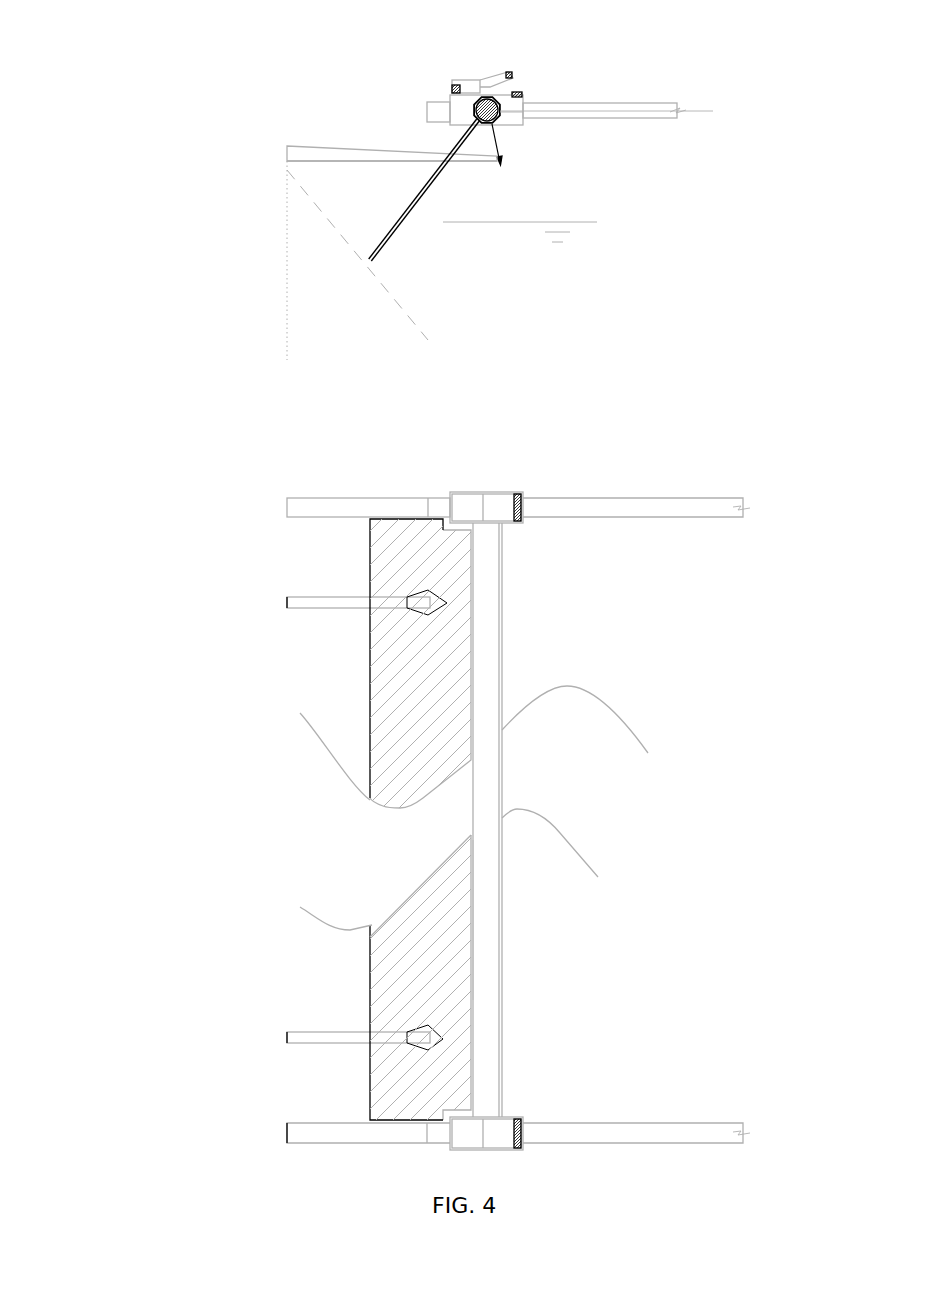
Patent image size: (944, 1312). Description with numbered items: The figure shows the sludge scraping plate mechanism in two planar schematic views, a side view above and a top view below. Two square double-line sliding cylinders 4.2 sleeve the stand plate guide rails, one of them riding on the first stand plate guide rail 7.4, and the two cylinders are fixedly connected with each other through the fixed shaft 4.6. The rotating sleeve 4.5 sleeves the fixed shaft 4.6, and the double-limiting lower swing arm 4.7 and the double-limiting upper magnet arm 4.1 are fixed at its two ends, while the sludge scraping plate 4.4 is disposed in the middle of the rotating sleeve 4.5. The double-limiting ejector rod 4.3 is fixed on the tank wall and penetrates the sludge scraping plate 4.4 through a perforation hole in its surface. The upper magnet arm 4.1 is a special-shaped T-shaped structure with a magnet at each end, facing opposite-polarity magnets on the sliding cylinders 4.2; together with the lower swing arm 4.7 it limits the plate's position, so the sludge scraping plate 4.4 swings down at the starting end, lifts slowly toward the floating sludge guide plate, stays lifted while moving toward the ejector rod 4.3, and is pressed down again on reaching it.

The double-limiting upper magnet arm 4.1 is at (450, 85).
The double-line sliding cylinders 4.2 is at (450, 122).
The double-limiting ejector rod 4.3 is at (367, 157).
The sludge scraping plate 4.4 is at (420, 192).
The rotating sleeve 4.5 is at (523, 100).
The fixed shaft 4.6 is at (500, 112).
The double-limiting lower swing arm 4.7 is at (497, 145).
The first stand plate guide rail 7.4 is at (640, 498).